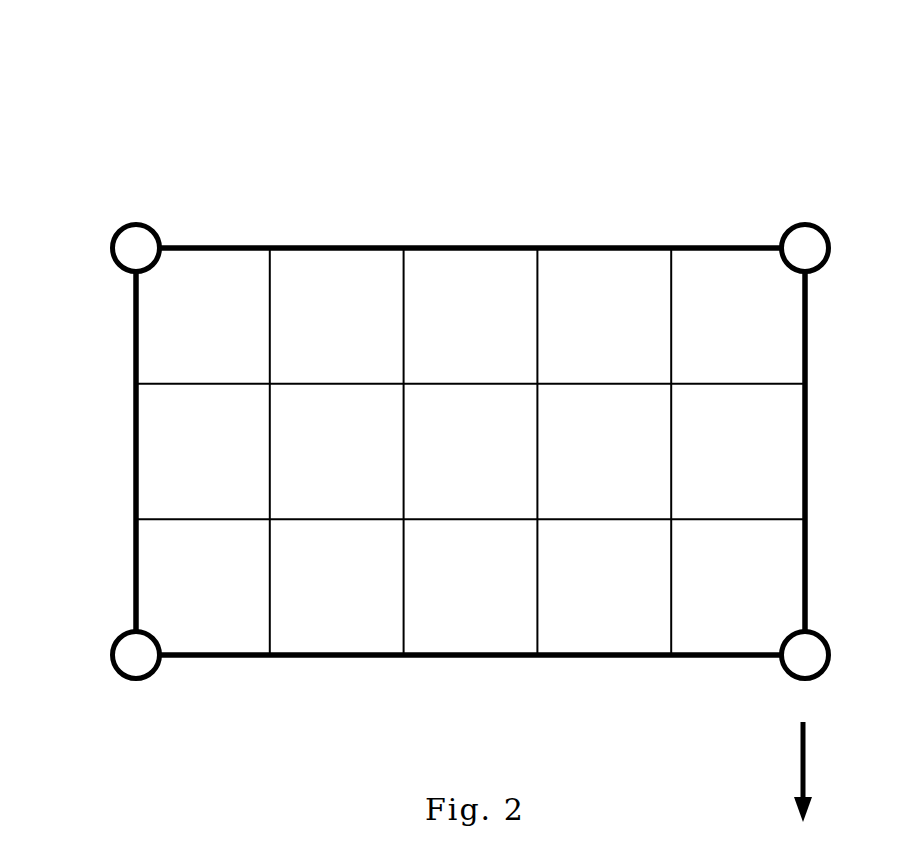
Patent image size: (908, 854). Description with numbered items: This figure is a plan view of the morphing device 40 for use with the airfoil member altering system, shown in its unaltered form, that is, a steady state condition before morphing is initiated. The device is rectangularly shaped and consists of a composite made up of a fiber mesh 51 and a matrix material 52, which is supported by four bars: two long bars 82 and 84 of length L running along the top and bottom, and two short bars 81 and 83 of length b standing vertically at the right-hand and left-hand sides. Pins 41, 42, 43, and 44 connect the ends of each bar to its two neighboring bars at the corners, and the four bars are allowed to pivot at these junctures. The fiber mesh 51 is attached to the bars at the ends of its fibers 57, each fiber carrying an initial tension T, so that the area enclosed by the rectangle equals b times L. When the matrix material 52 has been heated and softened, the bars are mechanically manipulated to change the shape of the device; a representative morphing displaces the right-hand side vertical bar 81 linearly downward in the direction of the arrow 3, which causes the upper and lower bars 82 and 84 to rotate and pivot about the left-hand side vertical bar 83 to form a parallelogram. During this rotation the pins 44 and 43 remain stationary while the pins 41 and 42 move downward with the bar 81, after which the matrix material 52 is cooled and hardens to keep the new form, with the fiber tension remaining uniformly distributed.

The morphing device 40 is at (403, 125).
The long bar 82 is at (438, 248).
The short bar 83 is at (135, 418).
The short bar 81 is at (806, 418).
The long bar 84 is at (487, 655).
The fibers 57 is at (270, 322).
The fiber mesh 51 is at (671, 384).
The matrix material 52 is at (603, 587).
The pin 44 is at (136, 248).
The pin 42 is at (805, 248).
The pin 43 is at (136, 655).
The pin 41 is at (805, 655).
The arrow 3 is at (803, 787).